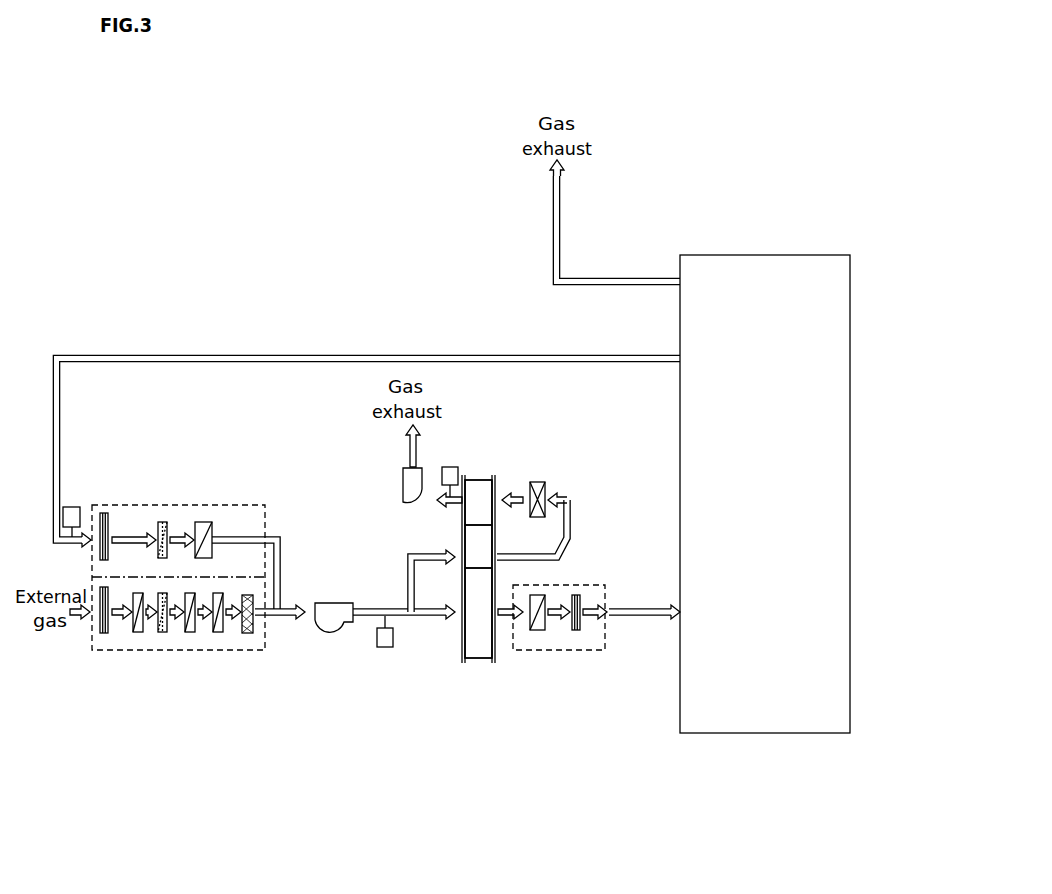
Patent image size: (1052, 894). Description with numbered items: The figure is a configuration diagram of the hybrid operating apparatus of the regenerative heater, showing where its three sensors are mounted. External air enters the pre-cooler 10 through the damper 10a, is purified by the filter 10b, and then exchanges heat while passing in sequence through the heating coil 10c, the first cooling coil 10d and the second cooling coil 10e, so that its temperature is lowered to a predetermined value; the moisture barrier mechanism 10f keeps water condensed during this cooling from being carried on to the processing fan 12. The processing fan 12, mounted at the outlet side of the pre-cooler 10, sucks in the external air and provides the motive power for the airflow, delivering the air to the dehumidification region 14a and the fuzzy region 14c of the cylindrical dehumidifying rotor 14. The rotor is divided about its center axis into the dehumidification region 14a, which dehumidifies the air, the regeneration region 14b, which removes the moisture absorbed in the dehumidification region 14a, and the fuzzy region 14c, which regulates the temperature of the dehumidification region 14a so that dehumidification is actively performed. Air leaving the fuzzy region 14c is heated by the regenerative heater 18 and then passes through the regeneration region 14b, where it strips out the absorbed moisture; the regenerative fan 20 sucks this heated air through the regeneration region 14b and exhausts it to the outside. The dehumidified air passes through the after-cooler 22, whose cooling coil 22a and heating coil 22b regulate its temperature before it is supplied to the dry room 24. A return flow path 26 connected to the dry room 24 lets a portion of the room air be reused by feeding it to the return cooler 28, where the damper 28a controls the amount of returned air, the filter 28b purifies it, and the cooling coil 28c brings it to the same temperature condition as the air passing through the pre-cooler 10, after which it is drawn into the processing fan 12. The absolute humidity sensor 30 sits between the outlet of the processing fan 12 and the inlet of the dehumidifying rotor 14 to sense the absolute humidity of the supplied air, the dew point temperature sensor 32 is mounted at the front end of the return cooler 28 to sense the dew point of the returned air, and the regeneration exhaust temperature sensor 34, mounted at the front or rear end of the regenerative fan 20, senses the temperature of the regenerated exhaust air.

The pre-cooler 10 is at (173, 650).
The damper 10a is at (103, 633).
The filter 10b is at (138, 632).
The heating coil 10c is at (163, 632).
The first cooling coil 10d is at (190, 632).
The second cooling coil 10e is at (218, 632).
The moisture barrier mechanism 10f is at (248, 633).
The processing fan 12 is at (332, 640).
The dehumidifying rotor 14 is at (507, 590).
The dehumidification region 14a is at (495, 580).
The regeneration region 14b is at (495, 488).
The fuzzy region 14c is at (495, 540).
The regenerative heater 18 is at (547, 482).
The regenerative fan 20 is at (403, 476).
The after-cooler 22 is at (560, 587).
The cooling coil 22a is at (540, 630).
The heating coil 22b is at (577, 630).
The dry room 24 is at (850, 300).
The return flow path 26 is at (173, 353).
The return cooler 28 is at (172, 505).
The damper 28a is at (103, 513).
The filter 28b is at (162, 521).
The cooling coil 28c is at (200, 521).
The absolute humidity sensor 30 is at (385, 647).
The dew point temperature sensor 32 is at (72, 505).
The regeneration exhaust temperature sensor 34 is at (450, 467).